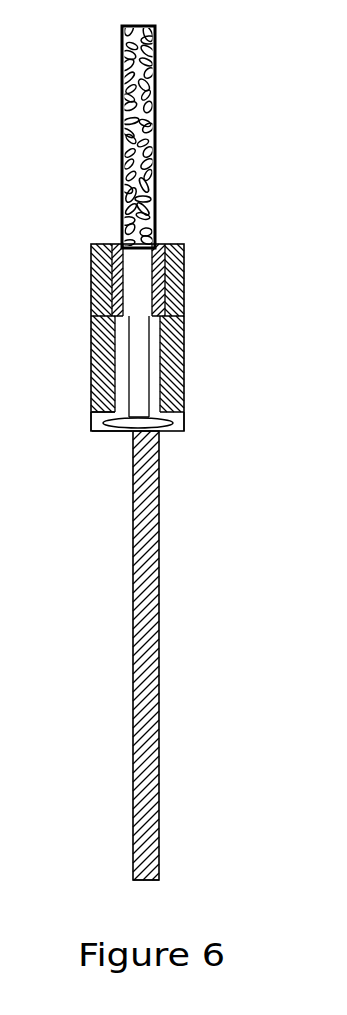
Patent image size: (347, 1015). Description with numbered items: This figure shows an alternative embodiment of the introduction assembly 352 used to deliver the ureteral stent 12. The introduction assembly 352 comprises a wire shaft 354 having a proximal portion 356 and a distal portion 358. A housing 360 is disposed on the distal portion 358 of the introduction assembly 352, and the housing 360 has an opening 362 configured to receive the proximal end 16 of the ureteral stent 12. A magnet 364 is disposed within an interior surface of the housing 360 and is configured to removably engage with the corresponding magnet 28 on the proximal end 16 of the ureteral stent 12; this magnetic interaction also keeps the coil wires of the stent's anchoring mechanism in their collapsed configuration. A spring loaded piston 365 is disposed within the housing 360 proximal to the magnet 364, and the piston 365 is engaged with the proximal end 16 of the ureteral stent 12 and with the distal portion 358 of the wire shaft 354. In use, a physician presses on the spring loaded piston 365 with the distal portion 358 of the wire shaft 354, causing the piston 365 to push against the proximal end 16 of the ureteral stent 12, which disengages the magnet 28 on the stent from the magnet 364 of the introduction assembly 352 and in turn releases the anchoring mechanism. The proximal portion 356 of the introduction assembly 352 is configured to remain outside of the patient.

The ureteral stent 12 is at (155, 120).
The proximal end 16 is at (91, 313).
The magnet 28 is at (160, 293).
The introduction assembly 352 is at (153, 718).
The wire shaft 354 is at (145, 625).
The proximal portion 356 is at (157, 875).
The distal portion 358 is at (131, 432).
The housing 360 is at (184, 387).
The opening 362 is at (96, 418).
The magnet 364 is at (175, 362).
The spring loaded piston 365 is at (128, 387).